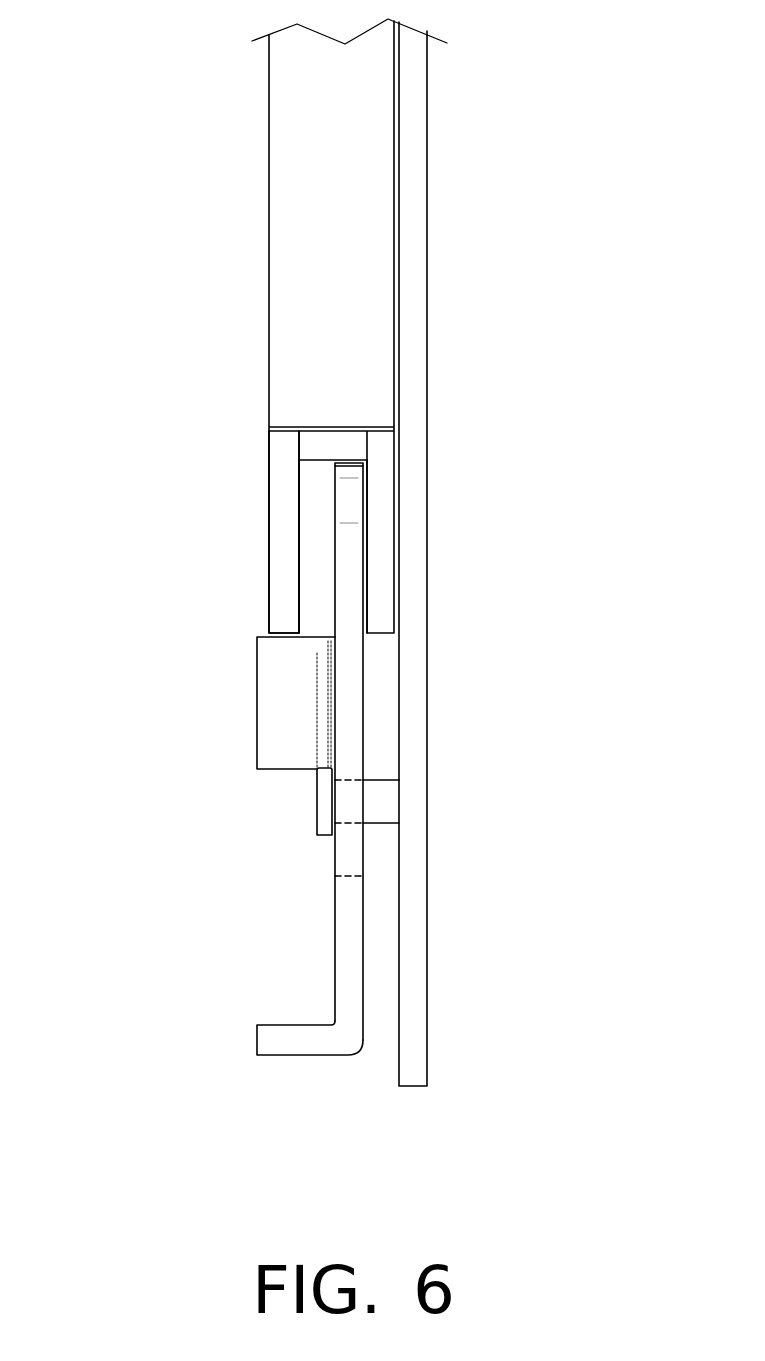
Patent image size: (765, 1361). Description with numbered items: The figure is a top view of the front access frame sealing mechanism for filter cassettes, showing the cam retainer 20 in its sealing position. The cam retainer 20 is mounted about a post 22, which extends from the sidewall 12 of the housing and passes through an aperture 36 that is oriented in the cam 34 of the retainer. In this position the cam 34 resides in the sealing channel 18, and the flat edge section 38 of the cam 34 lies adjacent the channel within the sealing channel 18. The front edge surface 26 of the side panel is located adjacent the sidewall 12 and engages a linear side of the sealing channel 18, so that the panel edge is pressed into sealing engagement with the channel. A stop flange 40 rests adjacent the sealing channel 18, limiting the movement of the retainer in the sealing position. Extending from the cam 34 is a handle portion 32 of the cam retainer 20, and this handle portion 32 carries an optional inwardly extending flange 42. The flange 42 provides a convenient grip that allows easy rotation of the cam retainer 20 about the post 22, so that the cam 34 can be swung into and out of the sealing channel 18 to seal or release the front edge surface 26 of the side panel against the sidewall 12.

The sidewall 12 is at (420, 664).
The sealing channel 18 is at (270, 553).
The cam retainer 20 is at (305, 813).
The post 22 is at (385, 803).
The front edge surface 26 is at (295, 181).
The handle portion 32 is at (343, 905).
The cam 34 is at (353, 498).
The aperture 36 is at (343, 853).
The flat edge section 38 is at (320, 471).
The stop flange 40 is at (257, 728).
The inwardly extending flange 42 is at (257, 1092).